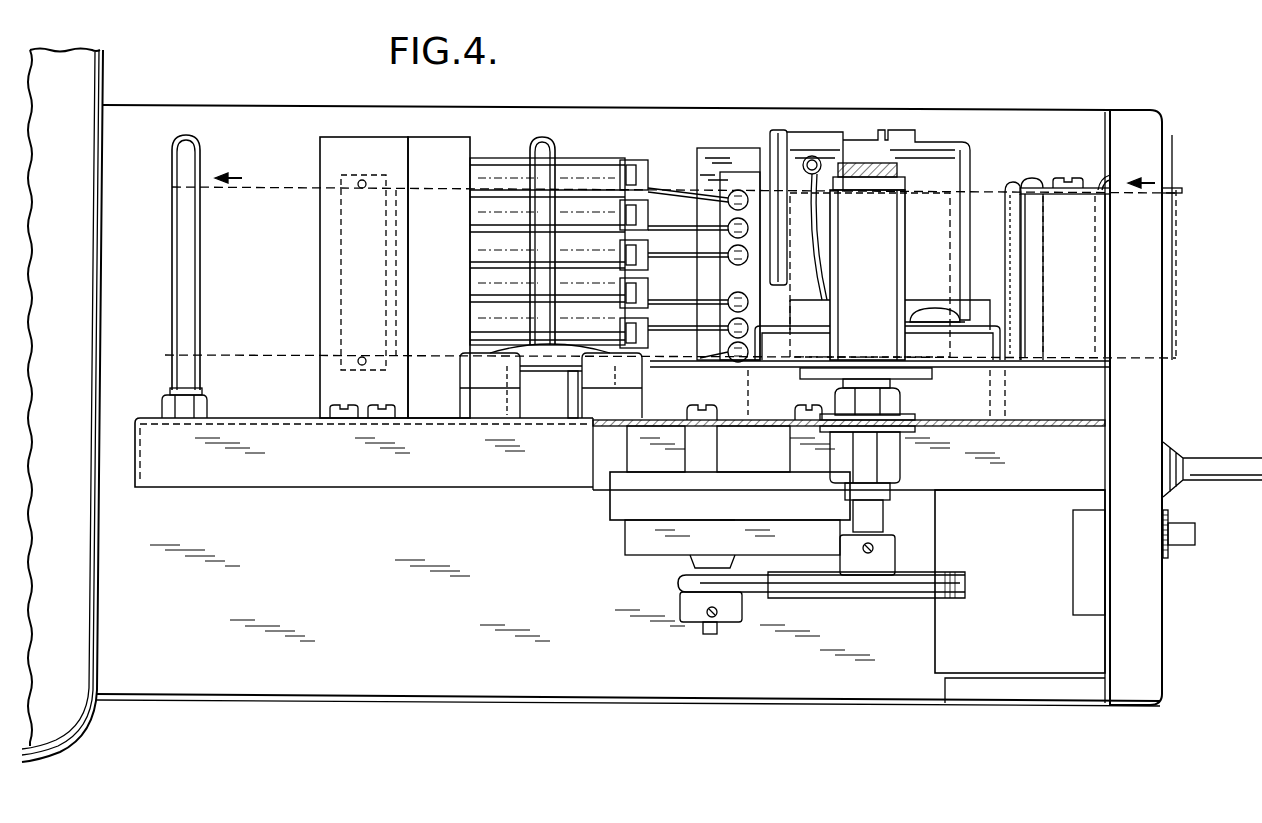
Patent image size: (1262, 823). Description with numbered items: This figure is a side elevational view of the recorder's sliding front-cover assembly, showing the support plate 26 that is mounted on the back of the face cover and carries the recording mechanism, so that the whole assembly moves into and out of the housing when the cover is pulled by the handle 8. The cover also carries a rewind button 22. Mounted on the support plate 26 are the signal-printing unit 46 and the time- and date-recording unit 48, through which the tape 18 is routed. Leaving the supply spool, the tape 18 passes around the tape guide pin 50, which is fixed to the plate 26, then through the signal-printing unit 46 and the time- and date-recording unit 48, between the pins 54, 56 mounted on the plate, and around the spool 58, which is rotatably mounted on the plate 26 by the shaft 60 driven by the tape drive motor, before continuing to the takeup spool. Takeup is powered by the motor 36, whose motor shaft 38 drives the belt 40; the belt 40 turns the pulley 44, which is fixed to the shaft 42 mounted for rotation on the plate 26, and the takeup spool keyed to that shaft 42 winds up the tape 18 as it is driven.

The handle 8 is at (1239, 463).
The tape 18 is at (1175, 276).
The rewind button 22 is at (1185, 541).
The support plate 26 is at (366, 480).
The motor 36 is at (612, 506).
The motor shaft 38 is at (693, 607).
The belt 40 is at (808, 586).
The shaft 42 is at (878, 510).
The pulley 44 is at (895, 594).
The signal-printing unit 46 is at (483, 139).
The time- and date-recording unit 48 is at (862, 124).
The tape guide pin 50 is at (183, 140).
The pin 54 is at (1034, 179).
The pin 56 is at (1011, 181).
The spool 58 is at (1106, 180).
The shaft 60 is at (1090, 170).